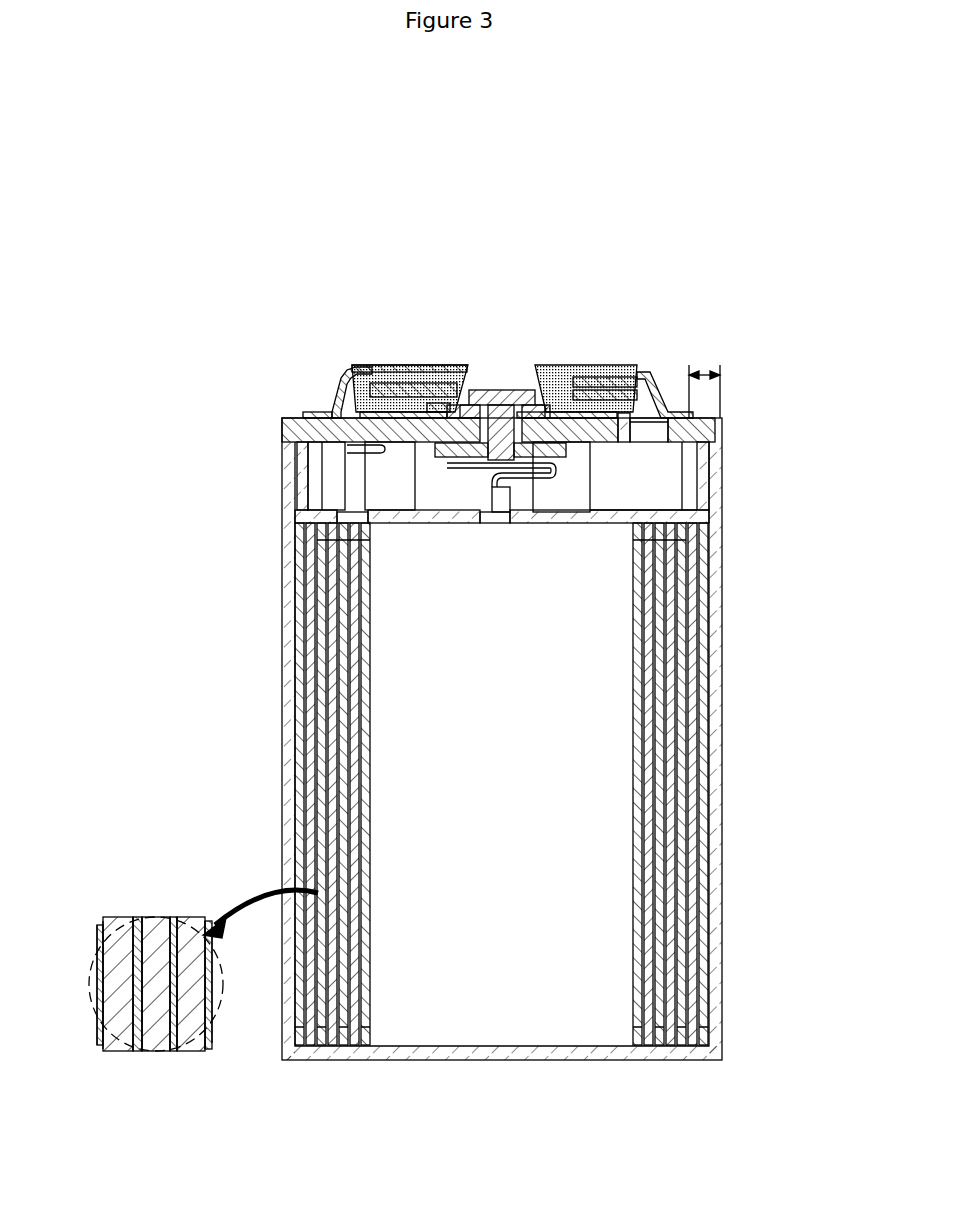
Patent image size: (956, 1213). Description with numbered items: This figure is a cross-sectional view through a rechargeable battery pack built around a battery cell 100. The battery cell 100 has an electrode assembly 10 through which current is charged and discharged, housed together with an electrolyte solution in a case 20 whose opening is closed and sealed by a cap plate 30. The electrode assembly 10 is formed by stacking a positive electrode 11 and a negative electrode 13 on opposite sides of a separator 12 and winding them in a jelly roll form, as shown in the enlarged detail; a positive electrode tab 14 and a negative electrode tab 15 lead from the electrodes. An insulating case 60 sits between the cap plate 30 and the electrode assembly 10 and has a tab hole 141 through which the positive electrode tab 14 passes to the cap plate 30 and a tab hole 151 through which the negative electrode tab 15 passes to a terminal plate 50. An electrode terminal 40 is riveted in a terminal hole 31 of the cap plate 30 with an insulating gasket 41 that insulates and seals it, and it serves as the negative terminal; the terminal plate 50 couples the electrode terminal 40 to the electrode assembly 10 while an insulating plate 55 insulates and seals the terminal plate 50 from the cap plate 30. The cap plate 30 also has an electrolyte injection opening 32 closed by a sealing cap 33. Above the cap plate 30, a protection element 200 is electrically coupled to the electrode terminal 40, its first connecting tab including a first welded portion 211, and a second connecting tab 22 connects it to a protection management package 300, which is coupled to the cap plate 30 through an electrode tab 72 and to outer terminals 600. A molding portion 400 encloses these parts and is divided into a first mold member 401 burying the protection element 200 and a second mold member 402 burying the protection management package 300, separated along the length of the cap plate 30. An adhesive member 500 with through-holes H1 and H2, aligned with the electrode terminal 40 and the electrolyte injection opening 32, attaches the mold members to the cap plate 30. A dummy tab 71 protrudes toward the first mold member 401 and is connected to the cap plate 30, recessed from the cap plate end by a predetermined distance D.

The battery cell 100 is at (745, 640).
The electrode assembly 10 is at (305, 676).
The positive electrode 11 is at (156, 1040).
The separator 12 is at (192, 1030).
The negative electrode 13 is at (175, 915).
The positive electrode tab 14 is at (352, 484).
The tab hole 141 is at (358, 525).
The negative electrode tab 15 is at (565, 500).
The tab hole 151 is at (512, 522).
The case 20 is at (722, 868).
The second connecting tab 22 is at (613, 367).
The cap plate 30 is at (300, 430).
The terminal hole 31 is at (481, 390).
The electrolyte injection opening 32 is at (624, 442).
The sealing cap 33 is at (640, 442).
The electrode terminal 40 is at (478, 468).
The insulating gasket 41 is at (463, 458).
The terminal plate 50 is at (505, 500).
The insulating plate 55 is at (430, 455).
The insulating case 60 is at (707, 514).
The dummy tab 71 is at (652, 374).
The electrode tab 72 is at (337, 372).
The protection element 200 is at (575, 367).
The first welded portion 211 is at (511, 388).
The protection management package 300 is at (389, 367).
The molding portion 400 is at (152, 240).
The first mold member 401 is at (547, 367).
The second mold member 402 is at (349, 367).
The adhesive member 500 is at (597, 367).
The outer terminals 600 is at (450, 367).
The through-hole H1 is at (537, 367).
The through-hole H2 is at (617, 367).
The predetermined distance D is at (704, 380).